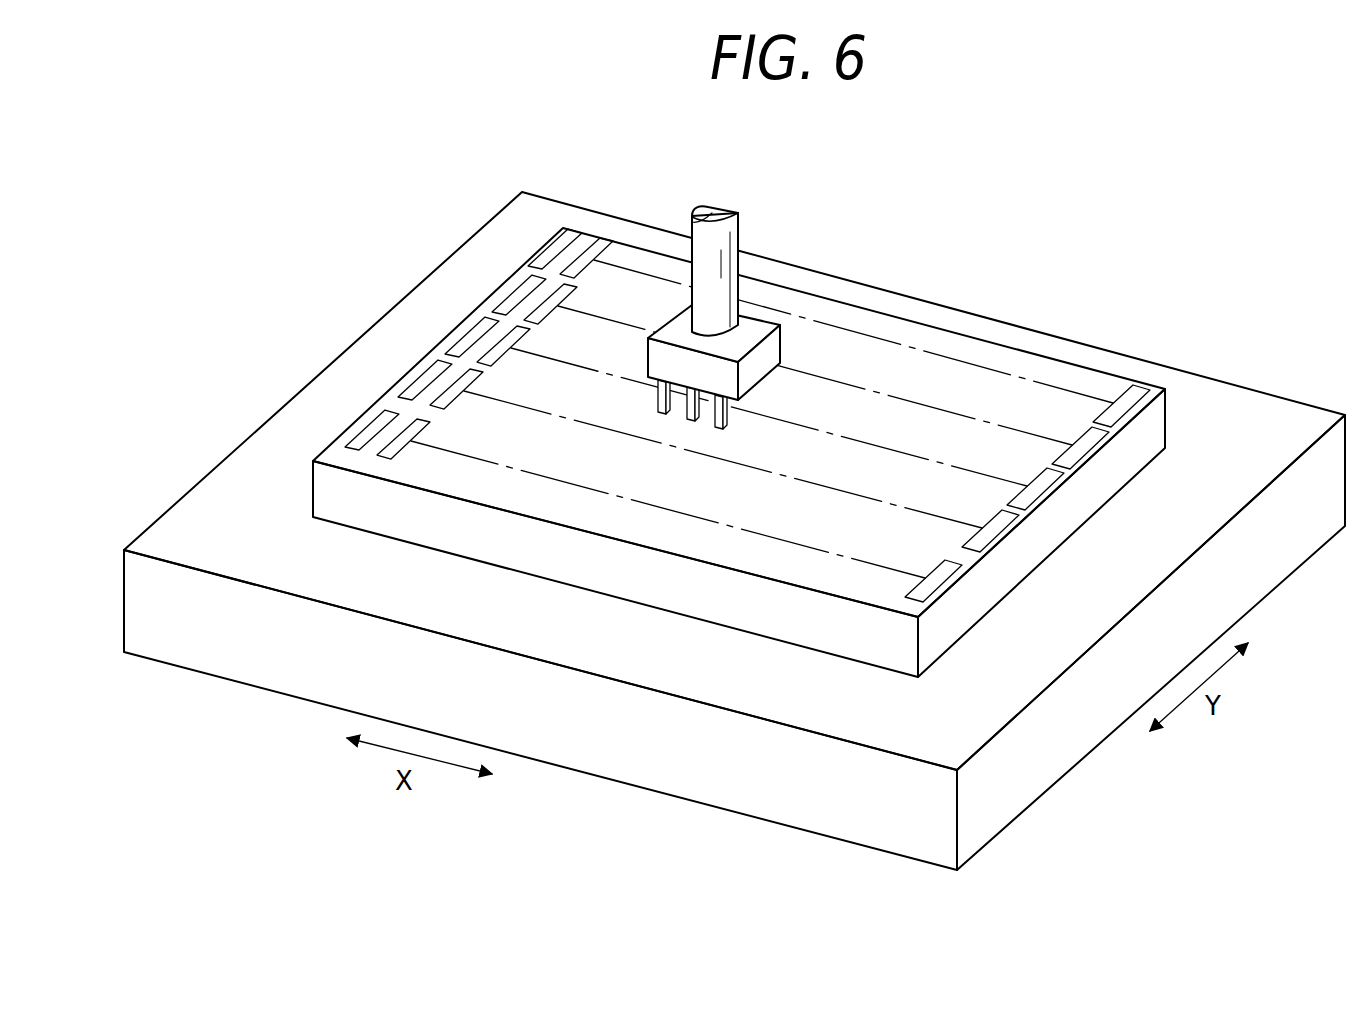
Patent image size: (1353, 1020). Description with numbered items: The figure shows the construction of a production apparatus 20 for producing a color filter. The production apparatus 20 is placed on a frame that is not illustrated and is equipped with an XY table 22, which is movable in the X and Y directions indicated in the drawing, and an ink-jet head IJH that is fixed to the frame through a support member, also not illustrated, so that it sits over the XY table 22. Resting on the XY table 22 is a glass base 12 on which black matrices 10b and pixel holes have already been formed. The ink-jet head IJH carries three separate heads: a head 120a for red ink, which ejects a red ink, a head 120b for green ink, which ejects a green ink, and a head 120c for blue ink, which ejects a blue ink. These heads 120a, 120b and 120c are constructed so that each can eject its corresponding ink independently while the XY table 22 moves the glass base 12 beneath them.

The black matrices 10b is at (520, 272).
The glass base 12 is at (1160, 432).
The production apparatus 20 is at (745, 313).
The ink-jet head IJH is at (758, 330).
The head for red ink 120a is at (655, 404).
The head for green ink 120b is at (689, 418).
The head for blue ink 120c is at (757, 400).
The XY table 22 is at (1073, 750).